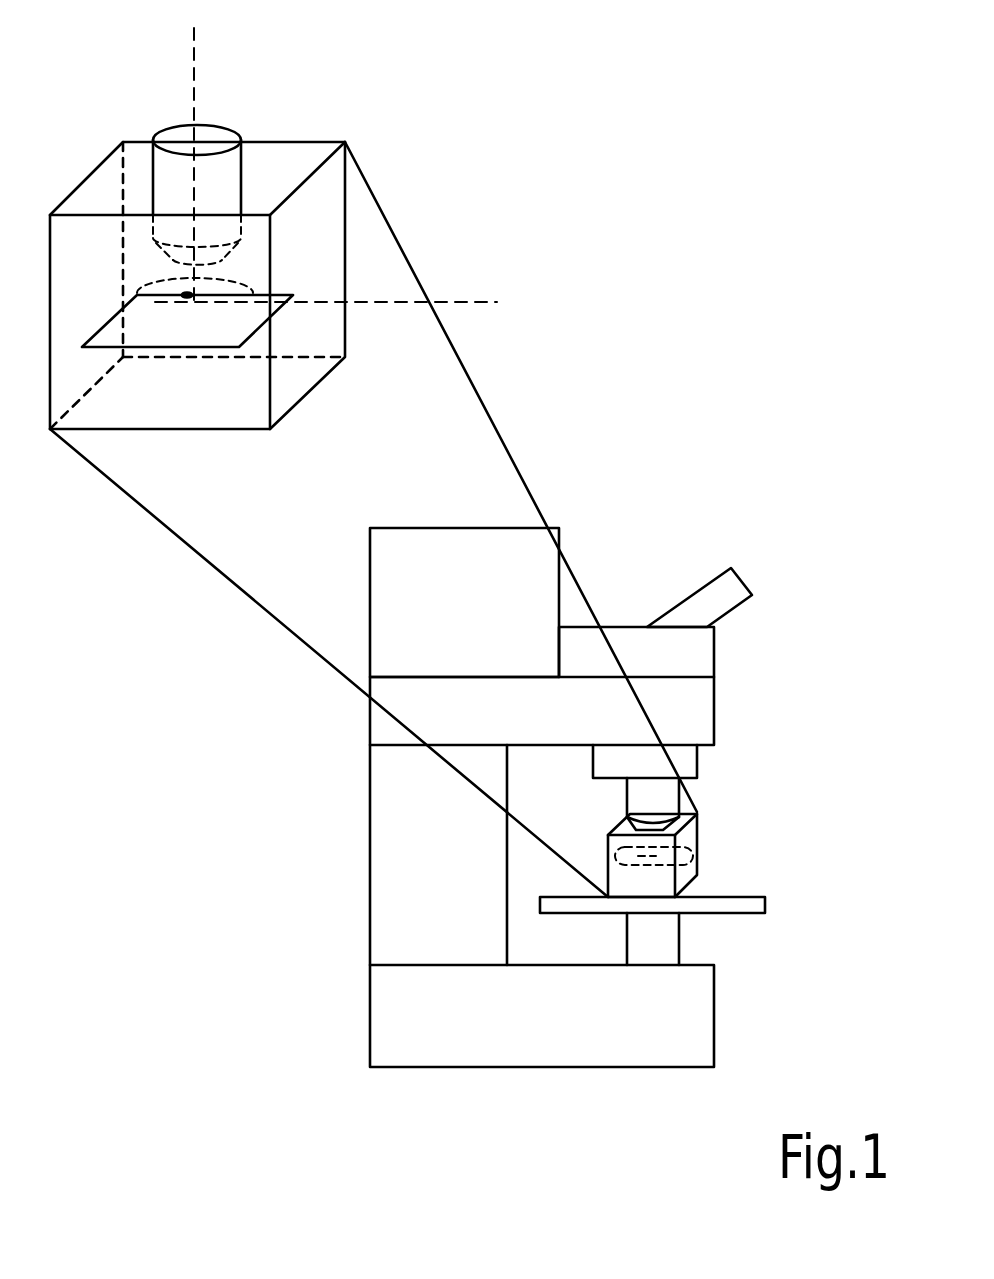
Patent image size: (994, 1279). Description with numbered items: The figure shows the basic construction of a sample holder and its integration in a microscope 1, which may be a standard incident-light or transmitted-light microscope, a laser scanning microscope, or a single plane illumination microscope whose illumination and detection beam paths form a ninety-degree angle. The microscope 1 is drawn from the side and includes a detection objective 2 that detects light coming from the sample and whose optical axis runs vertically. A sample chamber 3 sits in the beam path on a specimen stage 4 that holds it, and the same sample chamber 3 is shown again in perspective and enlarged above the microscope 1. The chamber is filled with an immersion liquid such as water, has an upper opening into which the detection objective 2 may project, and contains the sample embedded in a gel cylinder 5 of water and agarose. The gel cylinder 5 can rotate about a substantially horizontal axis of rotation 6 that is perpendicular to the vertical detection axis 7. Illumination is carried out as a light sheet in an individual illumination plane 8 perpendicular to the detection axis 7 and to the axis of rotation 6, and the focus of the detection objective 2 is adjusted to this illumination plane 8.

The microscope 1 is at (383, 663).
The detection objective 2 is at (670, 795).
The sample chamber 3 is at (688, 867).
The specimen stage 4 is at (757, 907).
The gel cylinder 5 is at (240, 287).
The axis of rotation 6 is at (346, 292).
The detection axis 7 is at (183, 156).
The illumination plane 8 is at (120, 320).